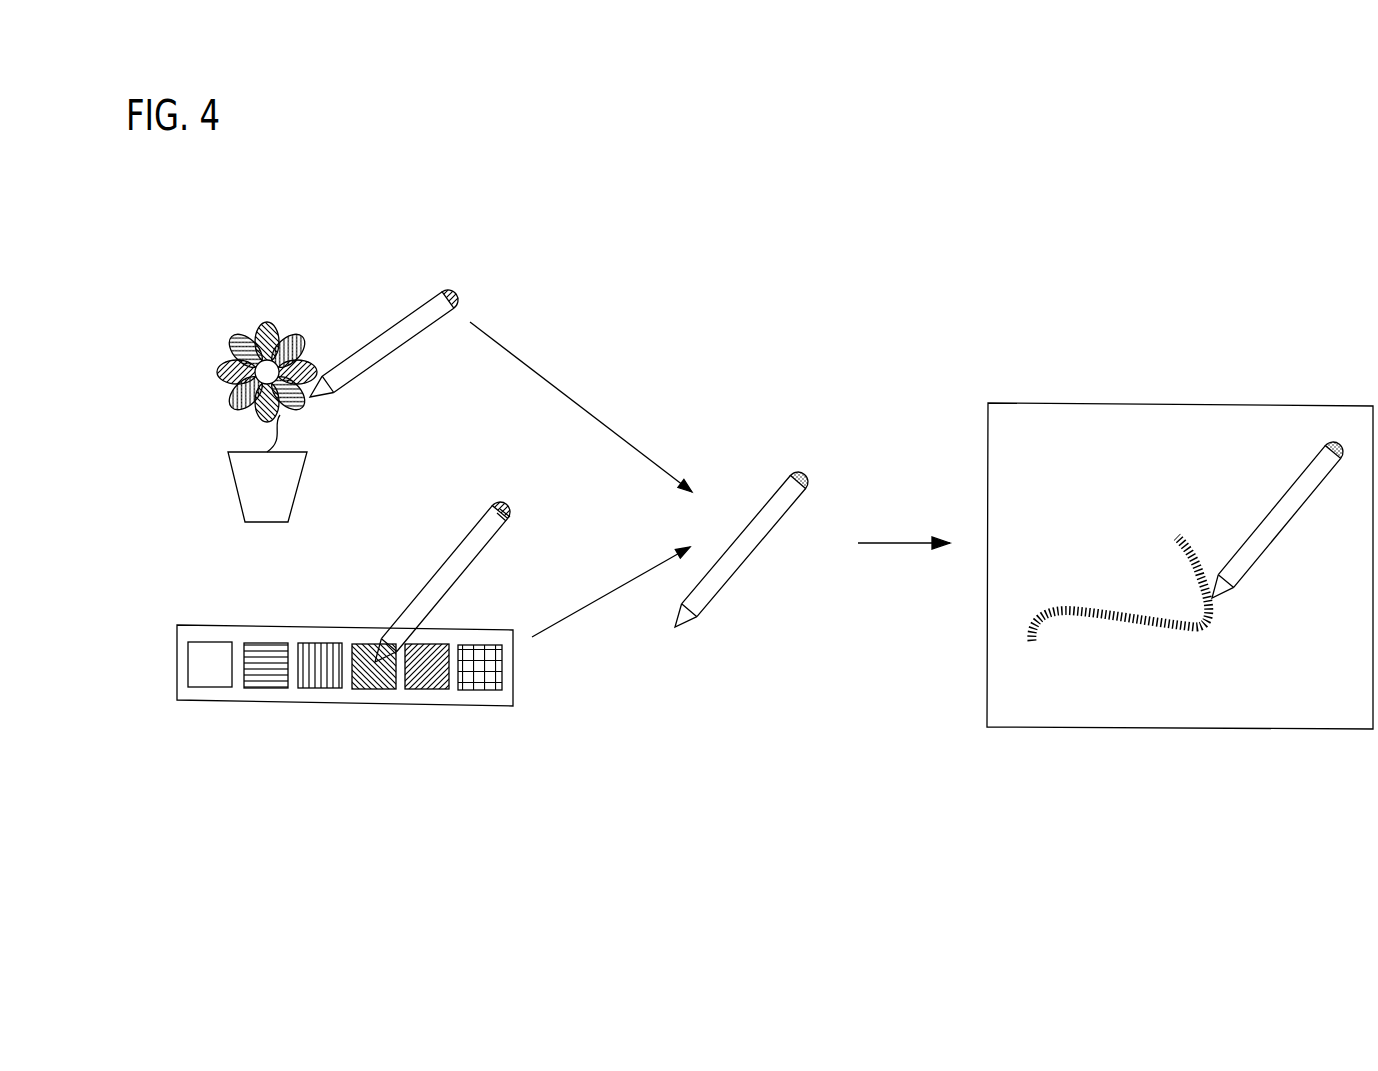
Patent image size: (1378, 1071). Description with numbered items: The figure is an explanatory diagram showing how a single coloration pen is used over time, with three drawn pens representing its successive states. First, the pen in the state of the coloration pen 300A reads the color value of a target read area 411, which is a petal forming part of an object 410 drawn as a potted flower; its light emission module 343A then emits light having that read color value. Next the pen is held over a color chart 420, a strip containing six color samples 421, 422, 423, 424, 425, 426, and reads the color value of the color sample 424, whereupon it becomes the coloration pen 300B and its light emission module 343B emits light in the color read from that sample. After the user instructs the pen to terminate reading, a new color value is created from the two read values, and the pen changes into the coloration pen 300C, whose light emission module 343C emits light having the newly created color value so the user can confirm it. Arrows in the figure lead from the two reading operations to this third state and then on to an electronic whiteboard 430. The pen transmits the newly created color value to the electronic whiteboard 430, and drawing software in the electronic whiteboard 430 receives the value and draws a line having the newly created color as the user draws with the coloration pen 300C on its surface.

The coloration pen 300A is at (397, 297).
The light emission module 343A is at (455, 290).
The coloration pen 300B is at (499, 556).
The light emission module 343B is at (502, 513).
The coloration pen 300C is at (1009, 504).
The light emission module 343C is at (803, 470).
The object 410 is at (238, 492).
The target read area 411 is at (303, 403).
The color chart 420 is at (378, 656).
The color sample 421 is at (210, 642).
The color sample 422 is at (270, 643).
The color sample 423 is at (330, 643).
The color sample 424 is at (367, 644).
The color sample 425 is at (427, 645).
The color sample 426 is at (478, 647).
The electronic whiteboard 430 is at (1033, 729).